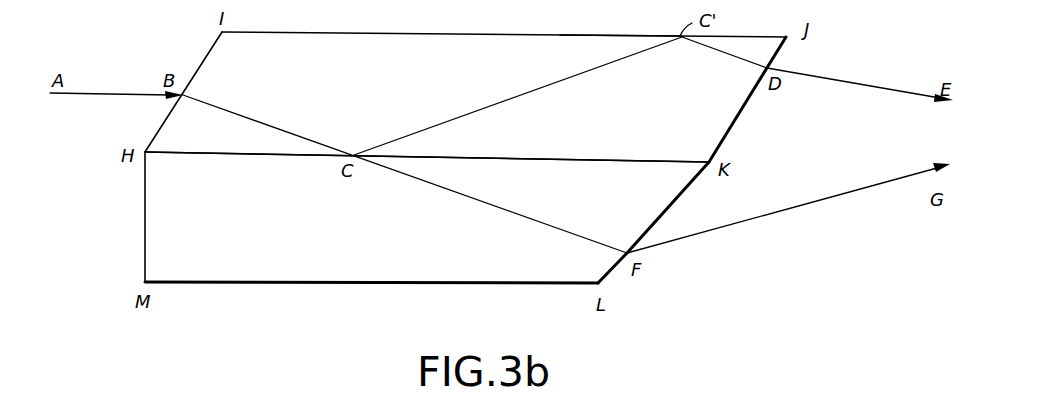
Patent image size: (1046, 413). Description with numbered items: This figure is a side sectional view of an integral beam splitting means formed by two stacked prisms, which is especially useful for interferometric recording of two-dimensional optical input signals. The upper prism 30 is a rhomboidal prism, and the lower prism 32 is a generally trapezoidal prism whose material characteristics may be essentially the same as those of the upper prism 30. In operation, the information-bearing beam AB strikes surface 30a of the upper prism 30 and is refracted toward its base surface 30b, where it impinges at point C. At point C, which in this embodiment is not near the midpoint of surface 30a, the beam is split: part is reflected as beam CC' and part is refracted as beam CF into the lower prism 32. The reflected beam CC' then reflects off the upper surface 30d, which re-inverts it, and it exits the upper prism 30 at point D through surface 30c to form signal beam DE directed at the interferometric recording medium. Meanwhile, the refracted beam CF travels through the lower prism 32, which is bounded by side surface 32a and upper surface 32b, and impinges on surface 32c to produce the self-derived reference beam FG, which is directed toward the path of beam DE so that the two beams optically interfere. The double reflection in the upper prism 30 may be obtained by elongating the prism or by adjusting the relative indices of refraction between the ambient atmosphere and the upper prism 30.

The upper prism 30 is at (387, 43).
The surface of upper prism 30a is at (211, 45).
The base surface of upper prism 30b is at (437, 155).
The exit surface of upper prism 30c is at (732, 128).
The upper surface of upper prism 30d is at (590, 36).
The lower prism 32 is at (301, 274).
The surface of lower prism 32a is at (145, 208).
The surface of lower prism 32b is at (538, 162).
The surface of lower prism 32c is at (668, 208).